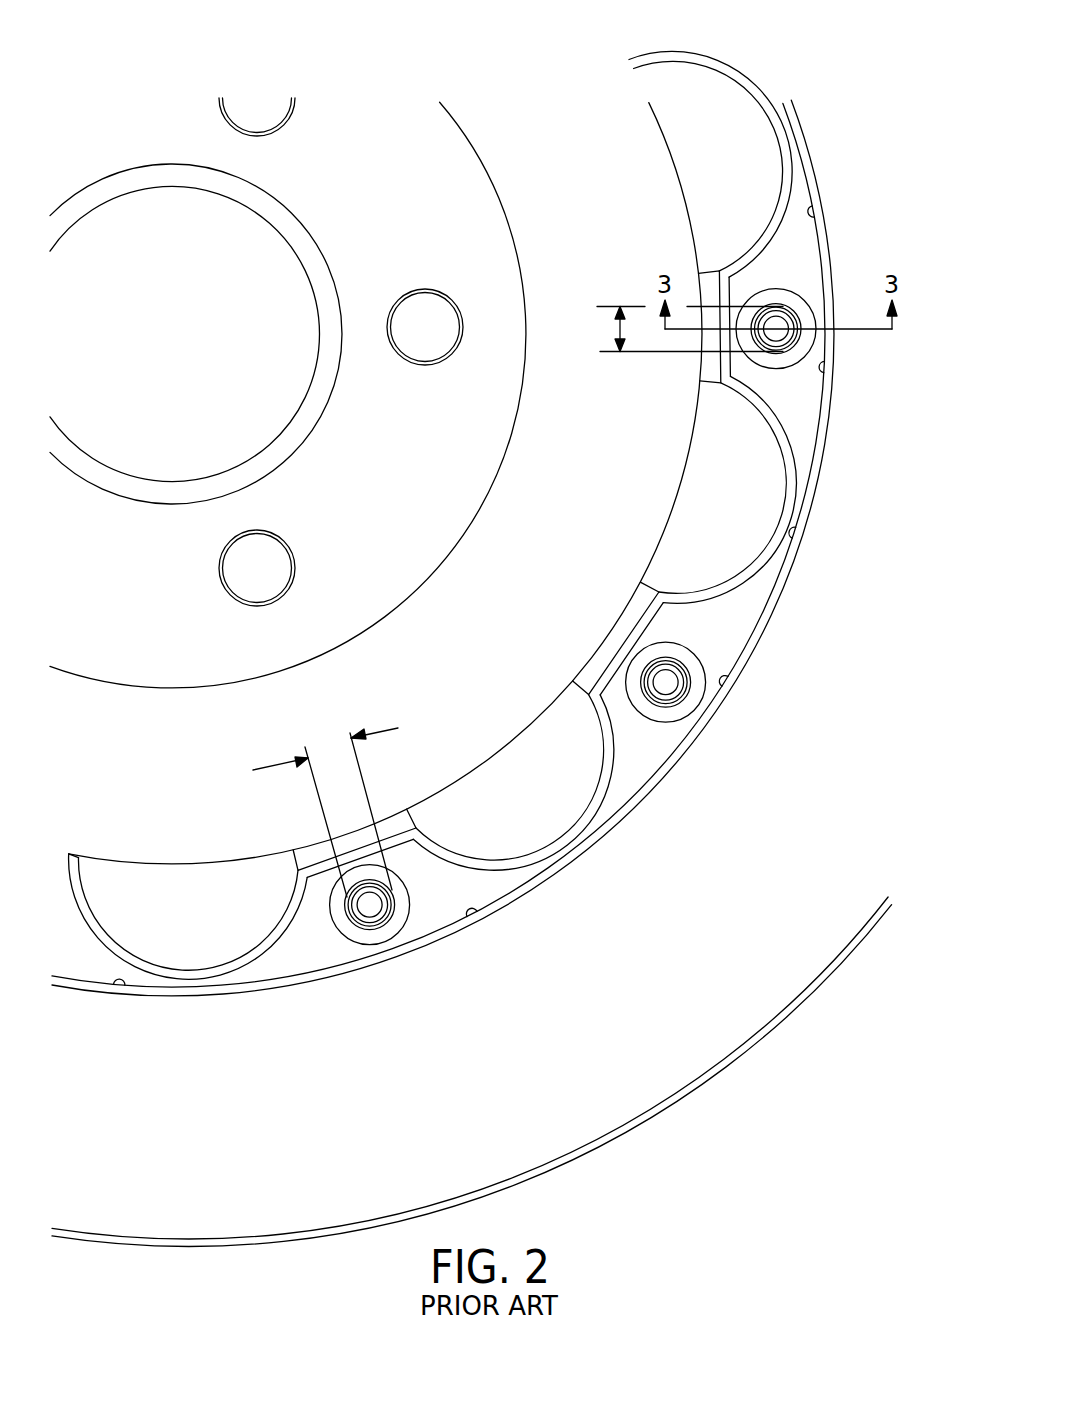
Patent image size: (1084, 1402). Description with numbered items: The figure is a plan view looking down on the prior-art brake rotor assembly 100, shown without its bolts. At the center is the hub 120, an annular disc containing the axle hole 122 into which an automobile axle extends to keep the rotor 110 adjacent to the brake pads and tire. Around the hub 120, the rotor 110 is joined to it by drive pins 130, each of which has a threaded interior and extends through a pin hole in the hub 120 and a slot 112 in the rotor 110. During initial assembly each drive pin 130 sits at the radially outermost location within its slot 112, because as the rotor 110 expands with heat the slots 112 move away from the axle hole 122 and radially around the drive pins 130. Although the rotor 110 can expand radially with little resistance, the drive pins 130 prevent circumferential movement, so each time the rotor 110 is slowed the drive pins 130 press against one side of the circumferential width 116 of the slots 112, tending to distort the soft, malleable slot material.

The brake rotor assembly 100 is at (604, 58).
The rotor 110 is at (680, 1096).
The slot 112 is at (638, 667).
The circumferential width 116 is at (618, 353).
The hub 120 is at (415, 592).
The axle hole 122 is at (188, 370).
The drive pin 130 is at (677, 710).